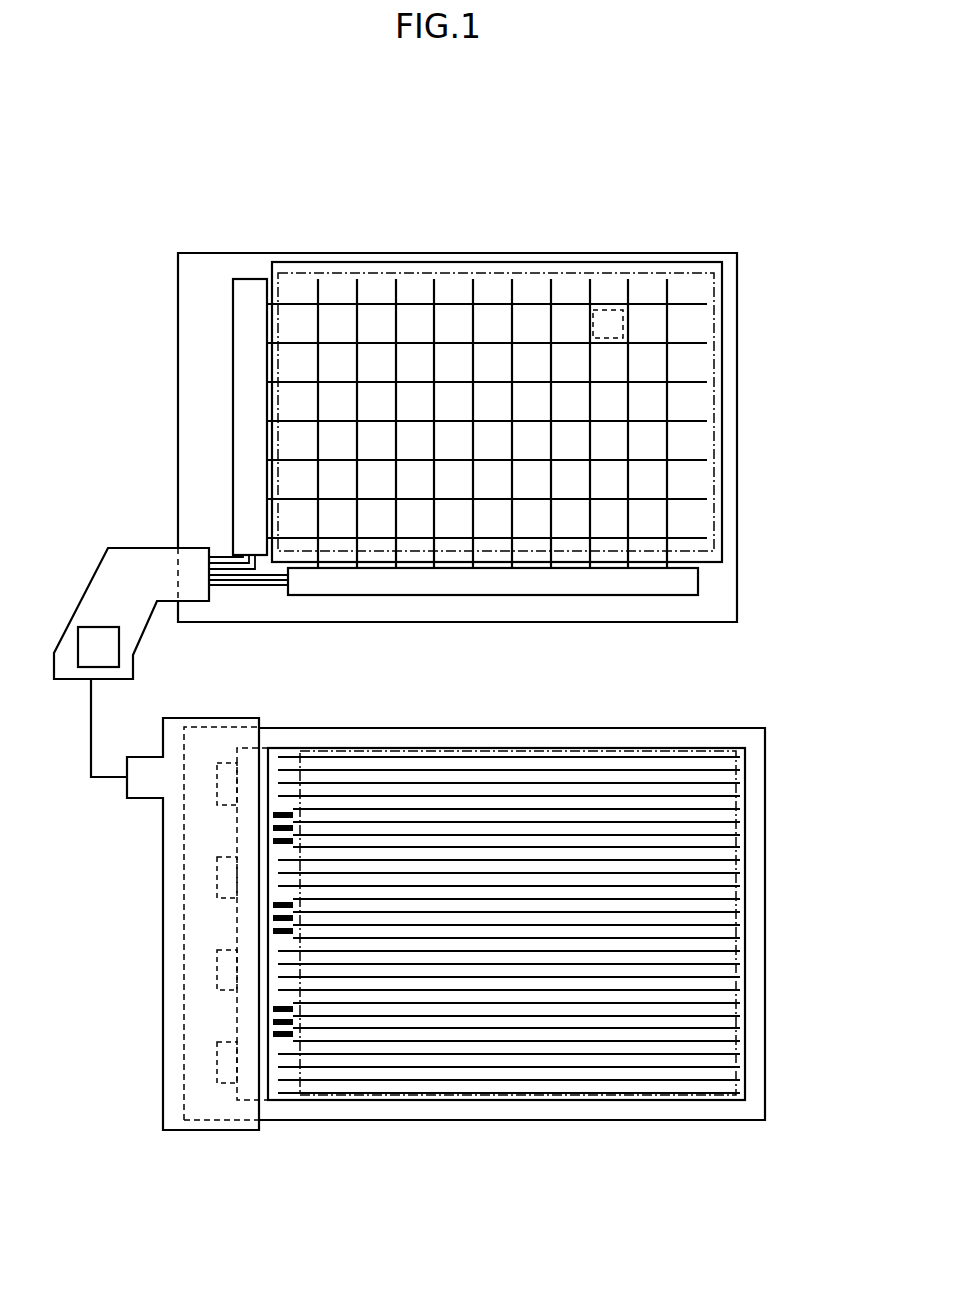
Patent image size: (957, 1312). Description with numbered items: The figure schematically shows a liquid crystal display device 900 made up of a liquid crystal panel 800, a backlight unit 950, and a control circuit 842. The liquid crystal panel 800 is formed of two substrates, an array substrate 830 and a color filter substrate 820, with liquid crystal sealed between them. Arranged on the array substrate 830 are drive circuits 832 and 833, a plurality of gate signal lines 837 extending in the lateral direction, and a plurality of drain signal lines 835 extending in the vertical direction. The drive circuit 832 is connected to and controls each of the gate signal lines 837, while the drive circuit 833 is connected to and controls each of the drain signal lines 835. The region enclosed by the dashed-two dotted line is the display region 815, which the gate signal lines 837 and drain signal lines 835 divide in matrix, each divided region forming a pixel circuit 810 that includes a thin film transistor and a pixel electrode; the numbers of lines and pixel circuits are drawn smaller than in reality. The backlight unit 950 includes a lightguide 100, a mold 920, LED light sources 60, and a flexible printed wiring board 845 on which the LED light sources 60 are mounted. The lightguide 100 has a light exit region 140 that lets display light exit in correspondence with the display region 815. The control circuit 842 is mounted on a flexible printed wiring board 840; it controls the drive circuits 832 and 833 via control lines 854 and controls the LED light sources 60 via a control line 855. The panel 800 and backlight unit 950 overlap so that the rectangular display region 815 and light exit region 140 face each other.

The liquid crystal display device 900 is at (483, 140).
The liquid crystal panel 800 is at (613, 228).
The array substrate 830 is at (217, 296).
The color filter substrate 820 is at (412, 265).
The pixel circuit 810 is at (607, 310).
The display region 815 is at (688, 289).
The drive circuit 832 is at (250, 427).
The drain signal lines 835 is at (670, 480).
The gate signal lines 837 is at (685, 498).
The flexible printed wiring board 840 is at (155, 576).
The control circuit 842 is at (96, 642).
The control lines 854 is at (237, 592).
The drive circuit 833 is at (412, 587).
The control line 855 is at (91, 728).
The backlight unit 950 is at (617, 712).
The LED light sources 60 is at (223, 1063).
The flexible printed wiring board 845 is at (175, 1018).
The lightguide 100 is at (685, 992).
The light exit region 140 is at (563, 1042).
The mold 920 is at (377, 1112).